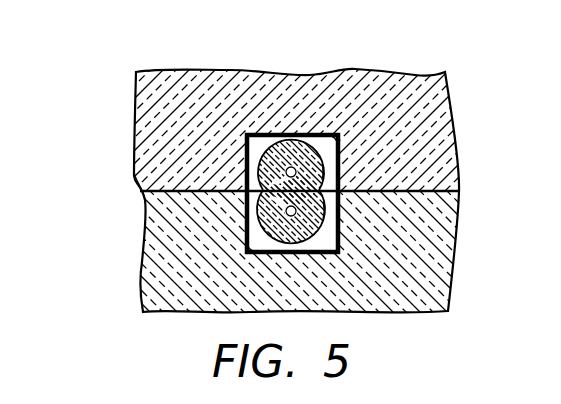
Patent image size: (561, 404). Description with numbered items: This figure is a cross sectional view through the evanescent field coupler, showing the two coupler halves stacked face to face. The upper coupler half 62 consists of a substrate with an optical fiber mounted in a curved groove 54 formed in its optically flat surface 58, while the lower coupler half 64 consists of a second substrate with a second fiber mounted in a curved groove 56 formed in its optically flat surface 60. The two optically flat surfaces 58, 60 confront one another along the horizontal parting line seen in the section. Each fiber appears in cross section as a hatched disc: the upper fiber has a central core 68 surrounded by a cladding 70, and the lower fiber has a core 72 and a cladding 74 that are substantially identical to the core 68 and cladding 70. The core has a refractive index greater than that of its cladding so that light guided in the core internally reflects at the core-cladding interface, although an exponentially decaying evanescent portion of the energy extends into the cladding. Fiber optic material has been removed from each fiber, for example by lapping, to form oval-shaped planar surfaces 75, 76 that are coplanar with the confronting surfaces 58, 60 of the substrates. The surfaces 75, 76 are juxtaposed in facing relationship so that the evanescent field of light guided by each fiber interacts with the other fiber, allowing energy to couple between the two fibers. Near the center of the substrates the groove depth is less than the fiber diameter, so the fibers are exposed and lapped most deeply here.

The curved groove 54 is at (315, 134).
The curved groove 56 is at (247, 243).
The optically flat surface 58 is at (160, 192).
The optically flat surface 60 is at (137, 182).
The coupler half 62 is at (130, 91).
The coupler half 64 is at (127, 303).
The central core 68 is at (296, 170).
The cladding 70 is at (324, 178).
The core 72 is at (296, 215).
The cladding 74 is at (327, 214).
The oval-shaped planar surface 75 is at (270, 244).
The oval-shaped planar surface 76 is at (273, 142).